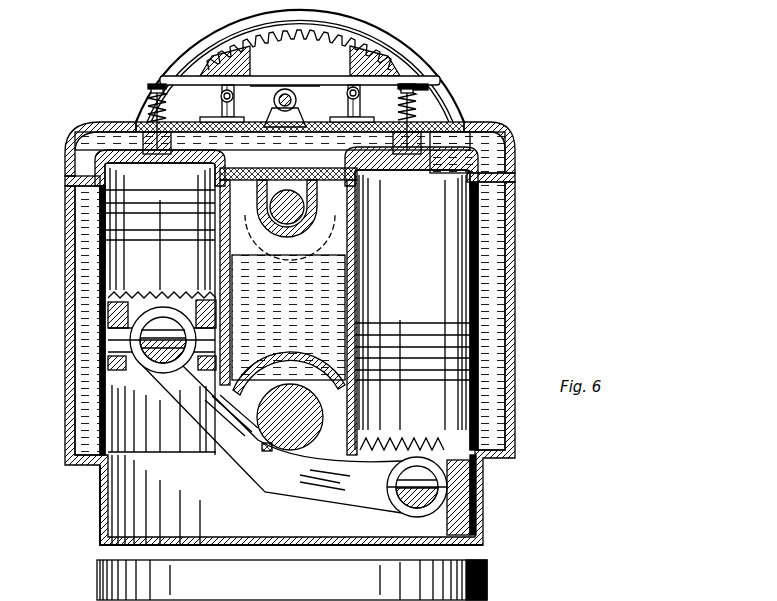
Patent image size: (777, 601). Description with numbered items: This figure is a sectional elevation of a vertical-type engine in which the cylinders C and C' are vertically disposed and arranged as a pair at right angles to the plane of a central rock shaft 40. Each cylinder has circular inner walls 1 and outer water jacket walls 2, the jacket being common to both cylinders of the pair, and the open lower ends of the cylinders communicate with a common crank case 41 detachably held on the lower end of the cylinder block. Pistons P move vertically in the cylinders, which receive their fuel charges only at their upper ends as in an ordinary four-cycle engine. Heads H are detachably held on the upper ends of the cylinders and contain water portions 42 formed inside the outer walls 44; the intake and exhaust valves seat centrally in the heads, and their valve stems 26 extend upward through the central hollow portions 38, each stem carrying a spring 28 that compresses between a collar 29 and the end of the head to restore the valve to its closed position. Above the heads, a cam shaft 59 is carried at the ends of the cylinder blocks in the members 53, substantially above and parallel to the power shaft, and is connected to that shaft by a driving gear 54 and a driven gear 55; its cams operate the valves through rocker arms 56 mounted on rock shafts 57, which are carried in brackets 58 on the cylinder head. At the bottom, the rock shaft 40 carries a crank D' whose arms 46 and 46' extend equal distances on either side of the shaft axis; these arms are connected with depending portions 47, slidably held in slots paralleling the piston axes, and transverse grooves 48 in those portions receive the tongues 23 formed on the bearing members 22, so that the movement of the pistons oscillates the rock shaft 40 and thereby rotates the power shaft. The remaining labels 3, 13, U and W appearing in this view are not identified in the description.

The circular inner walls 1 is at (66, 240).
The outer water jacket walls 2 is at (66, 278).
The water jacket space 3 is at (85, 260).
The cylinder liner 13 is at (95, 245).
The upper flange U is at (70, 190).
The head H is at (72, 146).
The water portions 42 is at (493, 143).
The outer walls of the heads 44 is at (505, 153).
The driven gear 55 is at (350, 31).
The cam shaft bearing 53 is at (312, 76).
The weight W is at (418, 40).
The rock shafts 57 is at (385, 76).
The brackets 58 is at (220, 100).
The cam shaft 59 is at (283, 88).
The valve stems 26 is at (130, 118).
The rocker arms 56 is at (190, 76).
The collars 29 is at (150, 95).
The springs 28 is at (140, 105).
The central hollow portions 38 is at (465, 110).
The piston P is at (160, 302).
The cylinder C' is at (411, 298).
The driving gear 54 is at (270, 225).
The rock shaft 40 is at (262, 420).
The crank arm 46 is at (125, 310).
The cylinder C is at (162, 436).
The crank D' is at (288, 412).
The bearing members 22 is at (145, 336).
The tongues 23 is at (150, 345).
The transverse grooves 48 is at (100, 372).
The depending portions 47 is at (455, 502).
The crank arm 46' is at (487, 498).
The crank case 41 is at (98, 503).